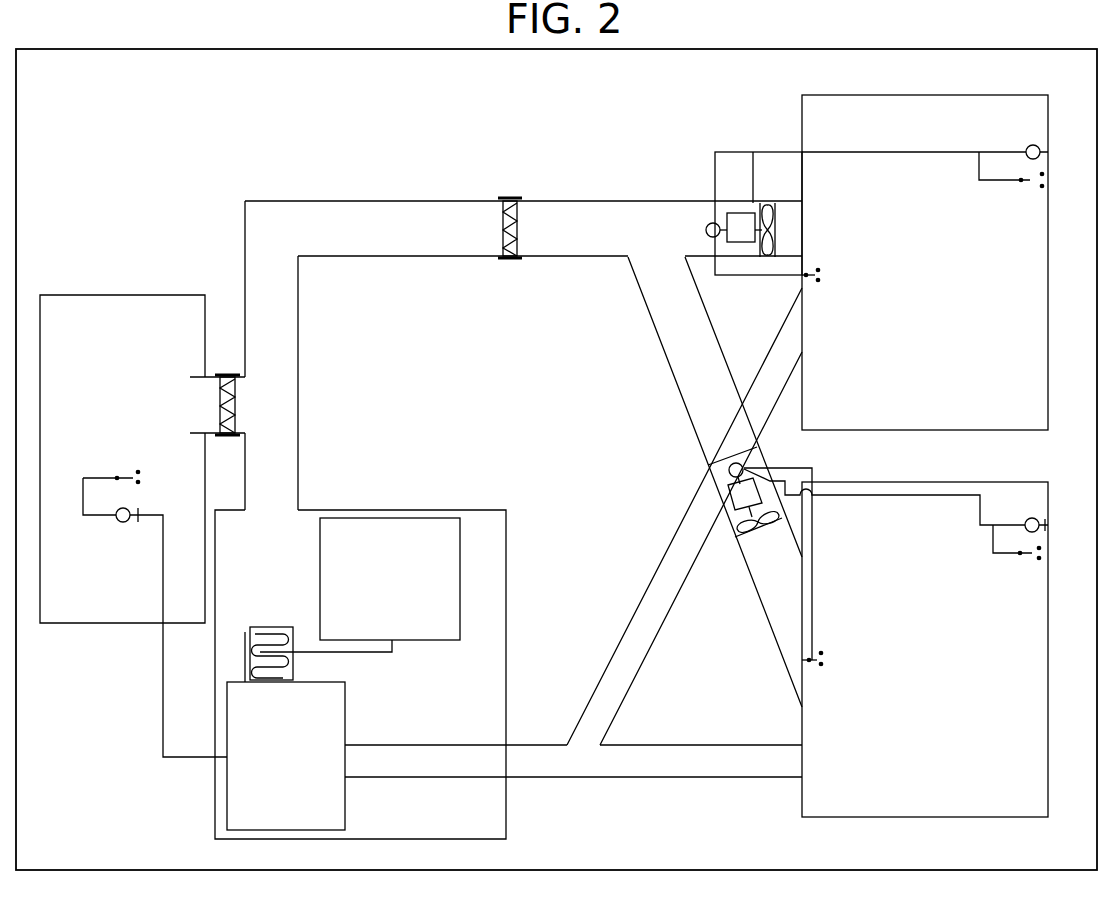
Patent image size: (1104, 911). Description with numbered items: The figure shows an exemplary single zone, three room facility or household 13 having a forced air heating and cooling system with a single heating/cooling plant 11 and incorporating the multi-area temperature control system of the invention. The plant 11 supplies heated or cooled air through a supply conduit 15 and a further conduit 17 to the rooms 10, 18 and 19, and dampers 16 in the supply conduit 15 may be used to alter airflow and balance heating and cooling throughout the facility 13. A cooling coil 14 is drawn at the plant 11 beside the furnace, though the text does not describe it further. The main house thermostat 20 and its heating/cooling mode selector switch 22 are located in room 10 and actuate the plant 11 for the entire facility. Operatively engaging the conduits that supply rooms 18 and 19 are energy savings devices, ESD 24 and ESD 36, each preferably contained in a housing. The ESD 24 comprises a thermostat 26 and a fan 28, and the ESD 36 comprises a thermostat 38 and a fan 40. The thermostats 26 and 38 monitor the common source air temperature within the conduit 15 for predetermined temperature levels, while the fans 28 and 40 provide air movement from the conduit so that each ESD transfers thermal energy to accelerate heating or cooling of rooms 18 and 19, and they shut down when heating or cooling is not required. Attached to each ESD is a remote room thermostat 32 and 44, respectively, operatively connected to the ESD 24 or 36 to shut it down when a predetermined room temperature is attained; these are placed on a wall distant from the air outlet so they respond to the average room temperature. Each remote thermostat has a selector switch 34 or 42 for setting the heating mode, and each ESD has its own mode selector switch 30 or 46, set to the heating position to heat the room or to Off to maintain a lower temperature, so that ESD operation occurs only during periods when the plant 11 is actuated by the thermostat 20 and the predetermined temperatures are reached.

The room 10 is at (122, 459).
The heating/cooling plant 11 is at (360, 674).
The facility or household 13 is at (556, 459).
The cooling coil 14 is at (245, 657).
The supply conduit 15 is at (523, 355).
The damper 16 is at (510, 199).
The conduit 17 is at (573, 517).
The room 18 is at (925, 262).
The room 19 is at (925, 649).
The main thermostat 20 is at (122, 522).
The heating/cooling mode control selector switch 22 is at (158, 463).
The energy savings device (ESD) 24 is at (701, 212).
The thermostat 26 is at (708, 224).
The fan 28 is at (742, 222).
The selector switch 30 is at (832, 282).
The room thermostat 32 is at (1028, 147).
The selector switch 34 is at (1038, 190).
The energy savings device (ESD) 36 is at (716, 532).
The thermostat 38 is at (744, 470).
The fan 40 is at (750, 493).
The selector switch 42 is at (1035, 563).
The room thermostat 44 is at (1027, 518).
The selector switch 46 is at (838, 645).